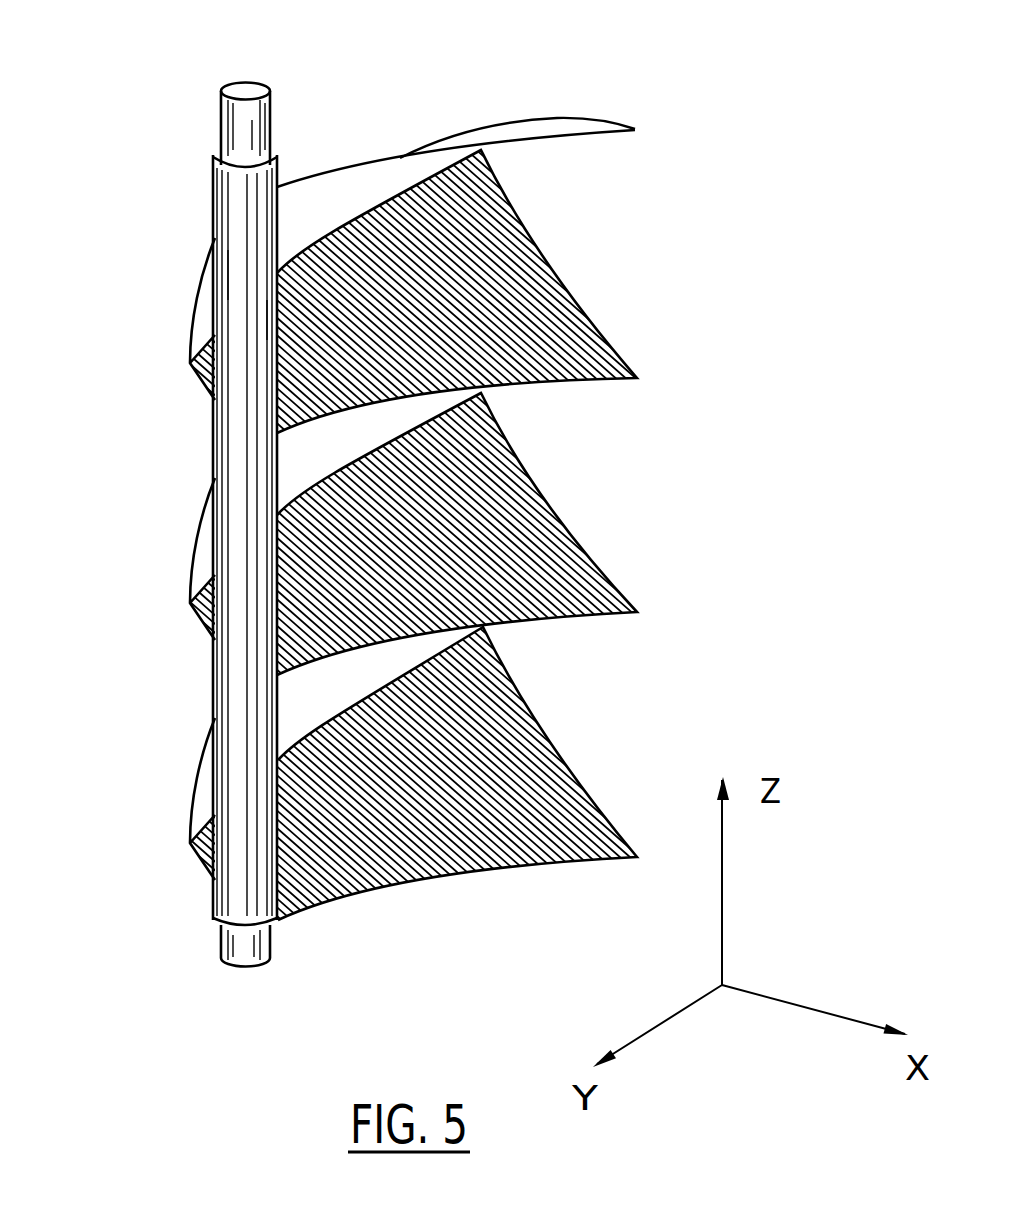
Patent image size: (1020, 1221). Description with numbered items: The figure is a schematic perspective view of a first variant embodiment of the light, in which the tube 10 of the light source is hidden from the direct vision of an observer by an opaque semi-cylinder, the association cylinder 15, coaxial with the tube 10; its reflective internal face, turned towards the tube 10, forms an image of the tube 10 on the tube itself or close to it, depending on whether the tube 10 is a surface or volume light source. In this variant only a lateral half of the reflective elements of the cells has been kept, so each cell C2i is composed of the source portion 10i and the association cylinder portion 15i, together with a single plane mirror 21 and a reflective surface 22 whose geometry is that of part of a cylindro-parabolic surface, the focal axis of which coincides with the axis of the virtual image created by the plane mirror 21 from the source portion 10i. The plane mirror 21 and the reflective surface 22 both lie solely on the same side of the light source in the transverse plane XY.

The tube 10 is at (270, 113).
The association cylinder 15 is at (238, 222).
The source portion 10i is at (215, 279).
The association cylinder portion 15i is at (263, 320).
The plane mirror 21 is at (550, 343).
The reflective surface 22 is at (400, 158).
The cell C2i is at (672, 258).